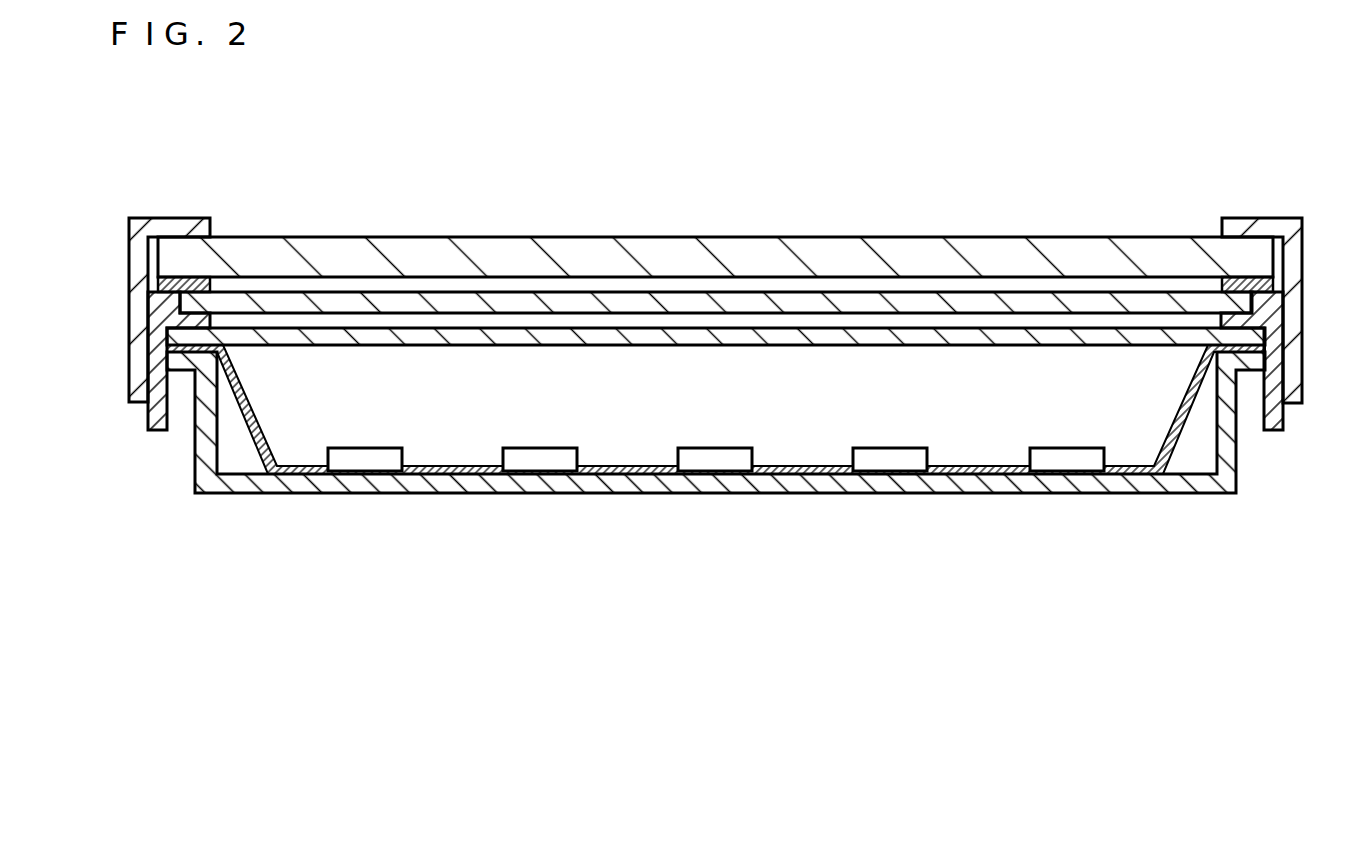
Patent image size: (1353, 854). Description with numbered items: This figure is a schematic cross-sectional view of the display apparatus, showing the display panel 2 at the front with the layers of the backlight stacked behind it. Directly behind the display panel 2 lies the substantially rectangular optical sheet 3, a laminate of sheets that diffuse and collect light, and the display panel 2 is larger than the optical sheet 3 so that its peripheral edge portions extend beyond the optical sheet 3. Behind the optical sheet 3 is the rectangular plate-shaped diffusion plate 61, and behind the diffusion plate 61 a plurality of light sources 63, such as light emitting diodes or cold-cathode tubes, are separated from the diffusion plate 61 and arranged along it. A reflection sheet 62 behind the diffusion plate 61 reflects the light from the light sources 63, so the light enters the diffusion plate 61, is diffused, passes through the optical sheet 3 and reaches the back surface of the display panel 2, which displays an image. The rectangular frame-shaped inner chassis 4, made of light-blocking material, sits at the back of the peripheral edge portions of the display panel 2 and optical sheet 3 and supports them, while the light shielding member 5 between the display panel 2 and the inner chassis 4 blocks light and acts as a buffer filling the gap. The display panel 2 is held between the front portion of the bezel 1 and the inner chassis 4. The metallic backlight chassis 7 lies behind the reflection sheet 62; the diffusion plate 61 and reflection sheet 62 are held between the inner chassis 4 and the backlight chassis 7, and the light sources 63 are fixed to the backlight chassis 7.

The bezel 1 is at (172, 230).
The display panel 2 is at (331, 246).
The optical sheet 3 is at (503, 300).
The inner chassis 4 is at (155, 428).
The light shielding member 5 is at (160, 283).
The backlight chassis 7 is at (447, 487).
The diffusion plate 61 is at (605, 338).
The reflection sheet 62 is at (296, 465).
The light sources 63 is at (367, 450).